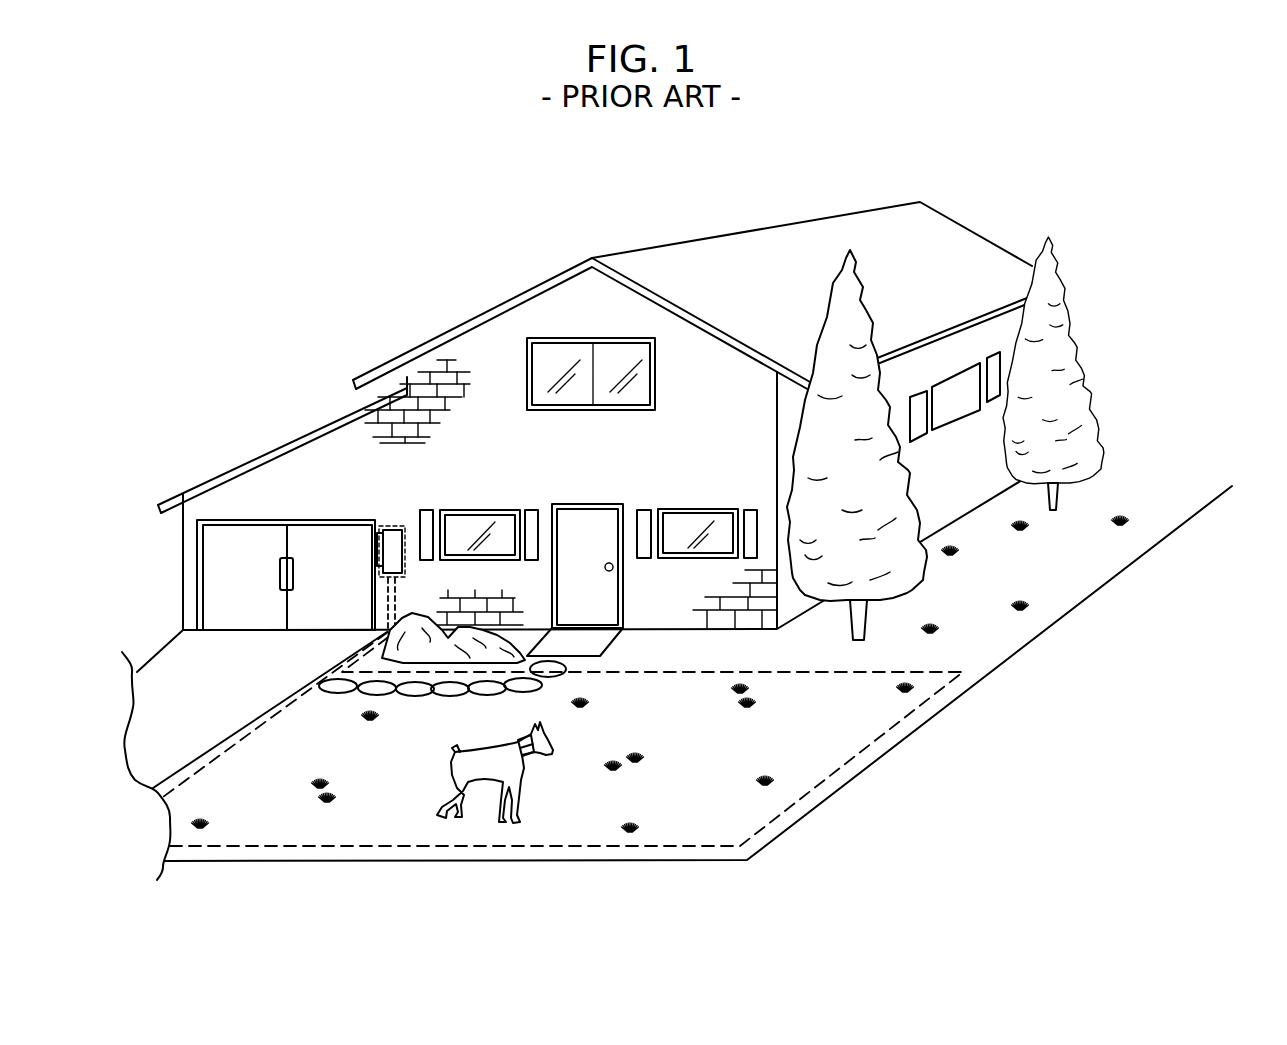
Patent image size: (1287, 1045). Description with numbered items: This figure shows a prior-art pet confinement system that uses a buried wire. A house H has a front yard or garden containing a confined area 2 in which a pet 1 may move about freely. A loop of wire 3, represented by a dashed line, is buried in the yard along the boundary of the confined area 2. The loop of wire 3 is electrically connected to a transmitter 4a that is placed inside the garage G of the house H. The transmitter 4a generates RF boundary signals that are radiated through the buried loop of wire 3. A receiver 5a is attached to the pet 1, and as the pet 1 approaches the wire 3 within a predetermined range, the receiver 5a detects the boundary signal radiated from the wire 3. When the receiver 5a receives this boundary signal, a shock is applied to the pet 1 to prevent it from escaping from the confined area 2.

The house H is at (437, 338).
The garage G is at (317, 530).
The transmitter 4a is at (396, 532).
The receiver 5a is at (520, 740).
The pet 1 is at (523, 758).
The confined area 2 is at (734, 749).
The loop of wire 3 is at (583, 862).